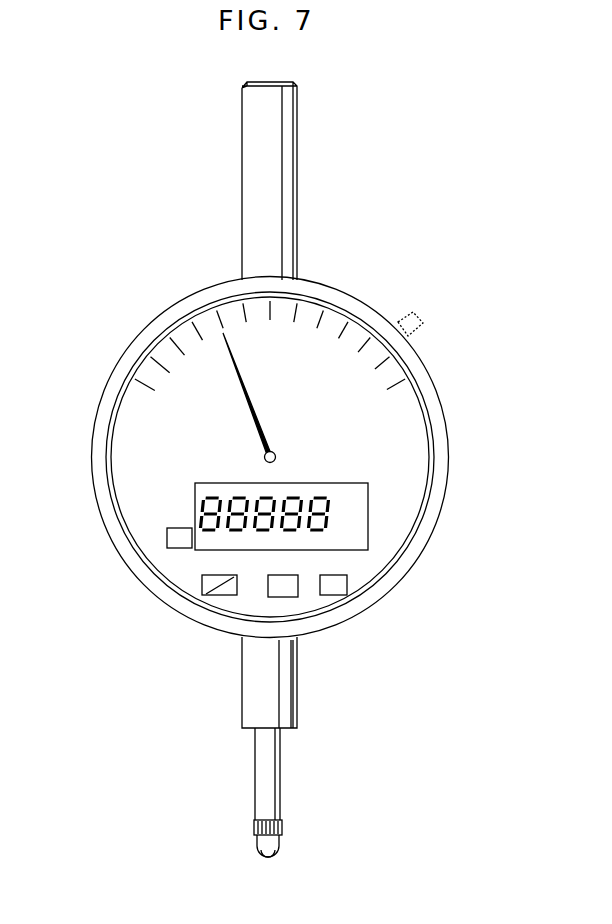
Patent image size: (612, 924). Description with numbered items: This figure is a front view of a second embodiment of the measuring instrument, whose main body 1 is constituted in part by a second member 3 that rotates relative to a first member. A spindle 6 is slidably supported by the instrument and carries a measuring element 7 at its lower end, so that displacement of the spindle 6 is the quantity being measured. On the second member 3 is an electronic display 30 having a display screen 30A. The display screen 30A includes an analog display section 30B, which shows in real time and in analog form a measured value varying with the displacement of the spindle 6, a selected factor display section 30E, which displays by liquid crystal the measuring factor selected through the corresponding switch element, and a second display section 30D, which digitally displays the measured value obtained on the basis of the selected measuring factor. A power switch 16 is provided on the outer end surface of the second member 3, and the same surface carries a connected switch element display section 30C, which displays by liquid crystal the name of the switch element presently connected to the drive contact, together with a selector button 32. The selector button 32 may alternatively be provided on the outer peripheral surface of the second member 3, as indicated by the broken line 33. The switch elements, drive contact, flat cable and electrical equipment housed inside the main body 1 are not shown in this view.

The main body 1 is at (378, 284).
The second member 3 is at (160, 320).
The spindle 6 is at (280, 763).
The measuring element 7 is at (281, 843).
The power switch 16 is at (215, 596).
The electronic display 30 is at (412, 424).
The display screen 30A is at (150, 361).
The analog display section 30B is at (256, 417).
The connected switch element display section 30C is at (289, 598).
The second display section 30D is at (211, 497).
The selected factor display section 30E is at (178, 528).
The selector button 32 is at (340, 596).
The broken line 33 is at (423, 323).